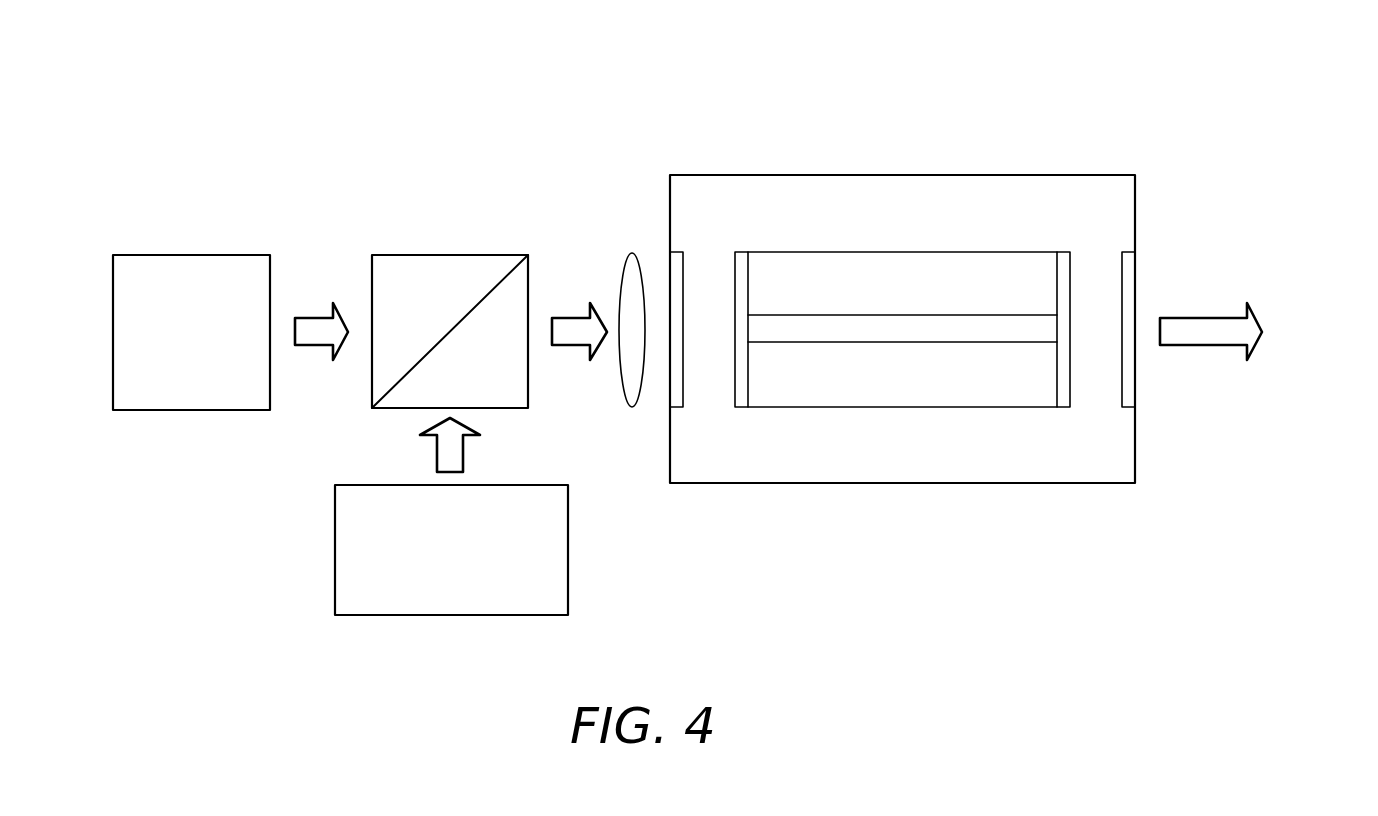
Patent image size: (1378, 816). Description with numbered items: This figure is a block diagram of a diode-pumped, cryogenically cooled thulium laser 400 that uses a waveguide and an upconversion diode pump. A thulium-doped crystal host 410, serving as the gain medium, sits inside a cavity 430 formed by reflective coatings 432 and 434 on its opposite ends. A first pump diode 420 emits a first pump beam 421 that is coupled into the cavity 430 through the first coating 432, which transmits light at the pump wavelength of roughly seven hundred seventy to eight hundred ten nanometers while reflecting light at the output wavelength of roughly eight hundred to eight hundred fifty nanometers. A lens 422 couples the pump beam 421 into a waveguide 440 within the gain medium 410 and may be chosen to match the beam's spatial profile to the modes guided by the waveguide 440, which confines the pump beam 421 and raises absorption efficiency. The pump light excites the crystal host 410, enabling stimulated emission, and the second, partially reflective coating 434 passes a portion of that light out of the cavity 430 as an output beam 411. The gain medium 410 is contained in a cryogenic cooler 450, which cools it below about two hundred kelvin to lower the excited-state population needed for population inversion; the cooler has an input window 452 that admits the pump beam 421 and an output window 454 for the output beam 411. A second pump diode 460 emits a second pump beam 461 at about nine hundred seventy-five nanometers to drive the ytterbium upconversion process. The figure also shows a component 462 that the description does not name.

The thulium laser 400 is at (343, 88).
The thulium-doped crystal host 410 is at (855, 407).
The output beam 411 is at (1258, 313).
The first pump diode 420 is at (142, 254).
The first pump beam 421 is at (320, 315).
The lens 422 is at (632, 253).
The cavity 430 is at (952, 462).
The first coating 432 is at (733, 262).
The second partially reflective coating 434 is at (1072, 265).
The waveguide 440 is at (813, 342).
The cryogenic cooler 450 is at (1025, 172).
The input window 452 is at (668, 390).
The output window 454 is at (1136, 388).
The second pump diode 460 is at (335, 545).
The second pump beam 461 is at (435, 440).
The beam combiner / polarizing beam splitter 462 is at (443, 255).